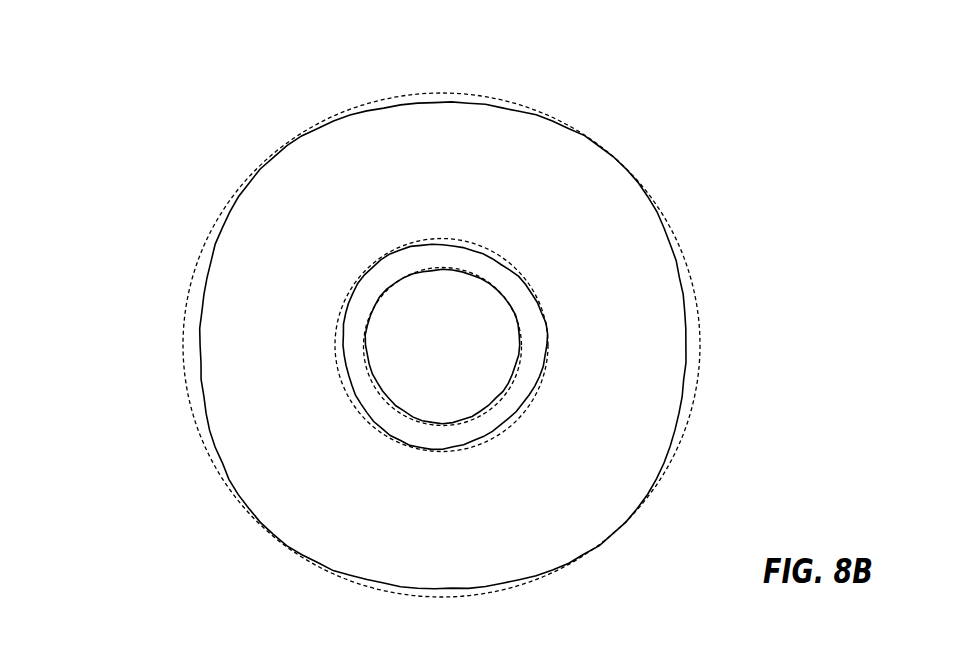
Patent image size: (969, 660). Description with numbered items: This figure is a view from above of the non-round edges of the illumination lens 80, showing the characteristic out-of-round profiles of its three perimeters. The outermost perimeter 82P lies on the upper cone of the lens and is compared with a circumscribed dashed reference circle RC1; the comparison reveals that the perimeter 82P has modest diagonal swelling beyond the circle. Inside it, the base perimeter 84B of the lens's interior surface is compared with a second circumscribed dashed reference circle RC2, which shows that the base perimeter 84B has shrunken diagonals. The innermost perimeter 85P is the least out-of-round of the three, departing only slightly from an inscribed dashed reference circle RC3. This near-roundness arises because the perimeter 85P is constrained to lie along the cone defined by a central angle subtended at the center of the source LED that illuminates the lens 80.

The illumination lens 80 is at (796, 158).
The circumscribed dashed reference circle RC1 is at (192, 270).
The perimeter 82P is at (197, 335).
The circumscribed dashed reference circle RC2 is at (352, 282).
The base perimeter 84B is at (510, 267).
The inscribed dashed reference circle RC3 is at (375, 342).
The perimeter 85P is at (452, 432).